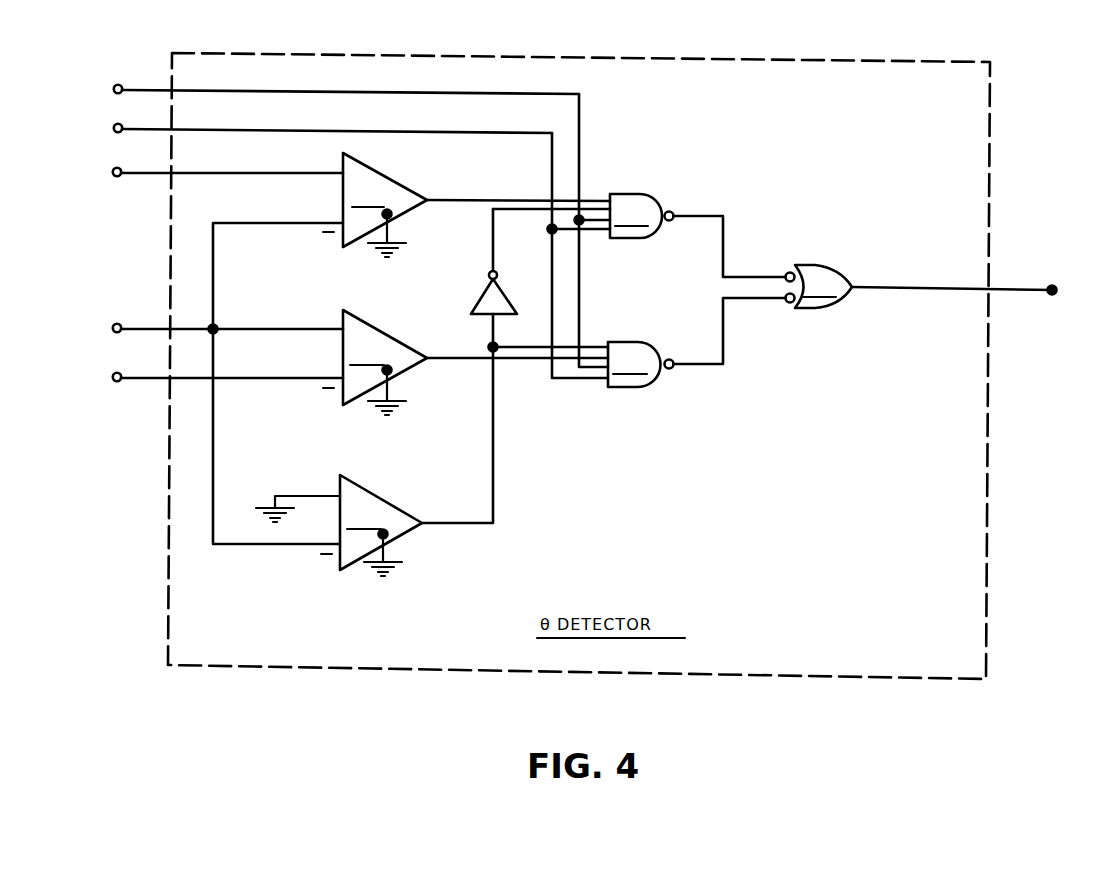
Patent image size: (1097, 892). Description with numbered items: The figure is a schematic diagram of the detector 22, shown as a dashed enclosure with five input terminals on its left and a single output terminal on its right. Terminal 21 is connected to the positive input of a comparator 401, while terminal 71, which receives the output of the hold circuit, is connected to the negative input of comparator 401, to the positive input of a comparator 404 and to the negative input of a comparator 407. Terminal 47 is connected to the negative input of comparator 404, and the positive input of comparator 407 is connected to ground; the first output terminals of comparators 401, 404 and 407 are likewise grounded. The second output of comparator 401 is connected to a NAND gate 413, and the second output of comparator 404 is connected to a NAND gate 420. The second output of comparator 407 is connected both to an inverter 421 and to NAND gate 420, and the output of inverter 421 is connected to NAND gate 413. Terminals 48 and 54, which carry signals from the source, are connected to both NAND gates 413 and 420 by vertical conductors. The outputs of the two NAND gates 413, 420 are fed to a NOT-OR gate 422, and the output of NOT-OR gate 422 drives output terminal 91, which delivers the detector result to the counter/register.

The detector 22 is at (992, 430).
The terminal 48 is at (114, 87).
The terminal 54 is at (114, 127).
The terminal 21 is at (113, 171).
The terminal 71 is at (113, 327).
The terminal 47 is at (113, 377).
The comparator 401 is at (466, 205).
The comparator 404 is at (465, 362).
The comparator 407 is at (374, 445).
The inverter 421 is at (482, 302).
The NAND gate 413 is at (698, 235).
The NAND gate 420 is at (697, 342).
The NOT-OR gate 422 is at (819, 286).
The output terminal 91 is at (1053, 288).